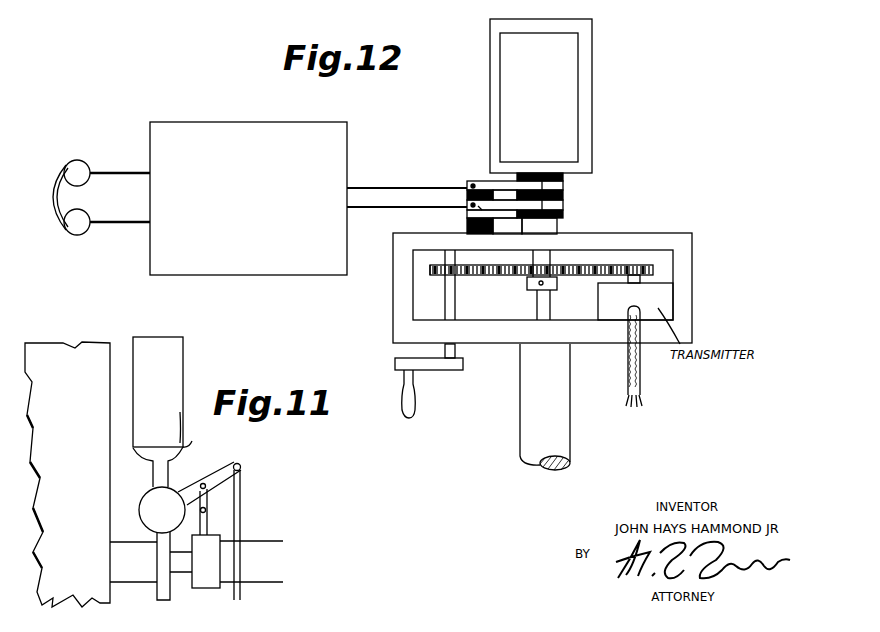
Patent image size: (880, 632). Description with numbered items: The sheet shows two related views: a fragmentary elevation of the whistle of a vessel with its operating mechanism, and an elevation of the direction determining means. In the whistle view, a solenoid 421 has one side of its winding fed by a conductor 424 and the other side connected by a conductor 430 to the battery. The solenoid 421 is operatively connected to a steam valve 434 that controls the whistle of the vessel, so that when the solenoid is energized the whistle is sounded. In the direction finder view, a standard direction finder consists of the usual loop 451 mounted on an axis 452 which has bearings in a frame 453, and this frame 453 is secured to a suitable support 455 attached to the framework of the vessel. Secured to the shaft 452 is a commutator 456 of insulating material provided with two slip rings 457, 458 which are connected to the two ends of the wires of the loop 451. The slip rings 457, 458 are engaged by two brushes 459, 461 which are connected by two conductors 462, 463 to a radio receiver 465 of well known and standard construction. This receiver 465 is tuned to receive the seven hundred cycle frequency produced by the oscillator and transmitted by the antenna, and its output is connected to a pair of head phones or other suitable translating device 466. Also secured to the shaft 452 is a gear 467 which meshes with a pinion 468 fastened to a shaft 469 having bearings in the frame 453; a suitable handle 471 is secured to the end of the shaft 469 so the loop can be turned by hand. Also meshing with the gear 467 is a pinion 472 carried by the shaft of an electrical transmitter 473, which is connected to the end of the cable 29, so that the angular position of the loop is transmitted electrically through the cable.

In FIG. 12, the loop 451 is at (590, 103).
In FIG. 12, the commutator 456 is at (567, 174).
In FIG. 12, the slip ring 457 is at (562, 189).
In FIG. 12, the slip ring 458 is at (560, 204).
In FIG. 12, the brush 459 is at (483, 185).
In FIG. 12, the brush 461 is at (467, 226).
In FIG. 12, the conductor 462 is at (400, 186).
In FIG. 12, the conductor 463 is at (384, 207).
In FIG. 12, the radio receiver 465 is at (347, 131).
In FIG. 12, the head phones 466 is at (86, 212).
In FIG. 12, the frame 453 is at (640, 234).
In FIG. 12, the axis 452 is at (540, 302).
In FIG. 12, the gear 467 is at (572, 278).
In FIG. 12, the pinion 472 is at (650, 259).
In FIG. 12, the pinion 468 is at (432, 272).
In FIG. 12, the electrical transmitter 473 is at (665, 300).
In FIG. 12, the cable 29 is at (641, 378).
In FIG. 12, the support 455 is at (525, 420).
In FIG. 12, the shaft 469 is at (457, 352).
In FIG. 12, the handle 471 is at (415, 373).
In FIG. 11, the steam valve 434 is at (152, 498).
In FIG. 11, the solenoid 421 is at (207, 588).
In FIG. 11, the conductor 424 is at (266, 541).
In FIG. 11, the conductor 430 is at (270, 582).